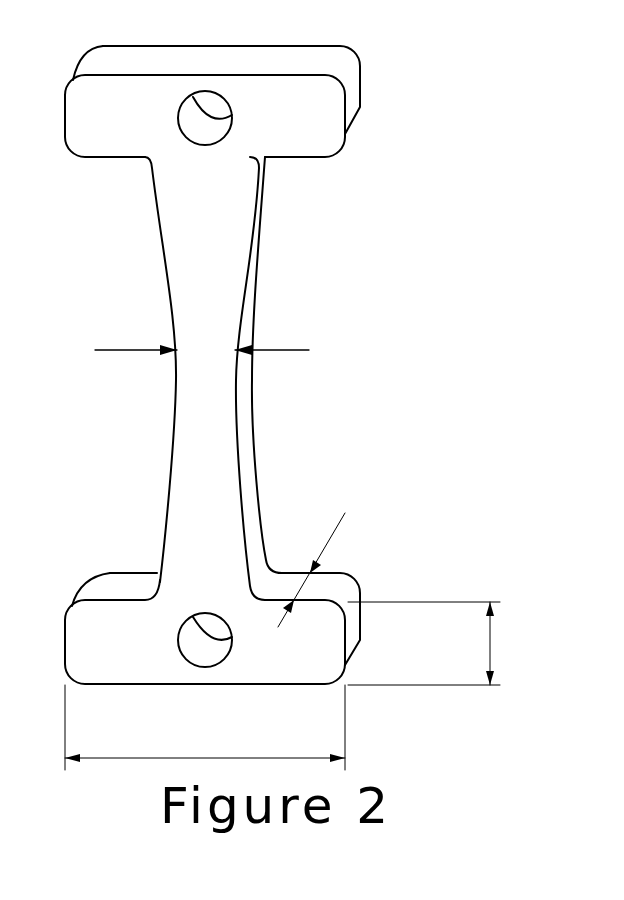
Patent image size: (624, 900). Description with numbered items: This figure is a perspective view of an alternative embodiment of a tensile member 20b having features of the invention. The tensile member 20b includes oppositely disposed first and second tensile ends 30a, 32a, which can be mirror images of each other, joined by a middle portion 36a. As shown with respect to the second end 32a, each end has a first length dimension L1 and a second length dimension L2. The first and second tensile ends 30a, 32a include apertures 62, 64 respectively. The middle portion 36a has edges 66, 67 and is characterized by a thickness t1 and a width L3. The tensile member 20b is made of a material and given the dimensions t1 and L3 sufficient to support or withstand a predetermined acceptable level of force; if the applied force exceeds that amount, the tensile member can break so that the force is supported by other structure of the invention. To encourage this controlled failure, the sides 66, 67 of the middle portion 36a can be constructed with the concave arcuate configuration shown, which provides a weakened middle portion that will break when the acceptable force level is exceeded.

The tensile member 20b is at (316, 365).
The first tensile end 30a is at (323, 110).
The second tensile end 32a is at (323, 655).
The middle portion 36a is at (215, 460).
The aperture 62 is at (205, 127).
The aperture 64 is at (205, 647).
The edge 66 is at (243, 275).
The edge 67 is at (168, 275).
The first length dimension L1 is at (490, 643).
The second length dimension L2 is at (168, 758).
The width L3 is at (128, 350).
The thickness t1 is at (302, 588).